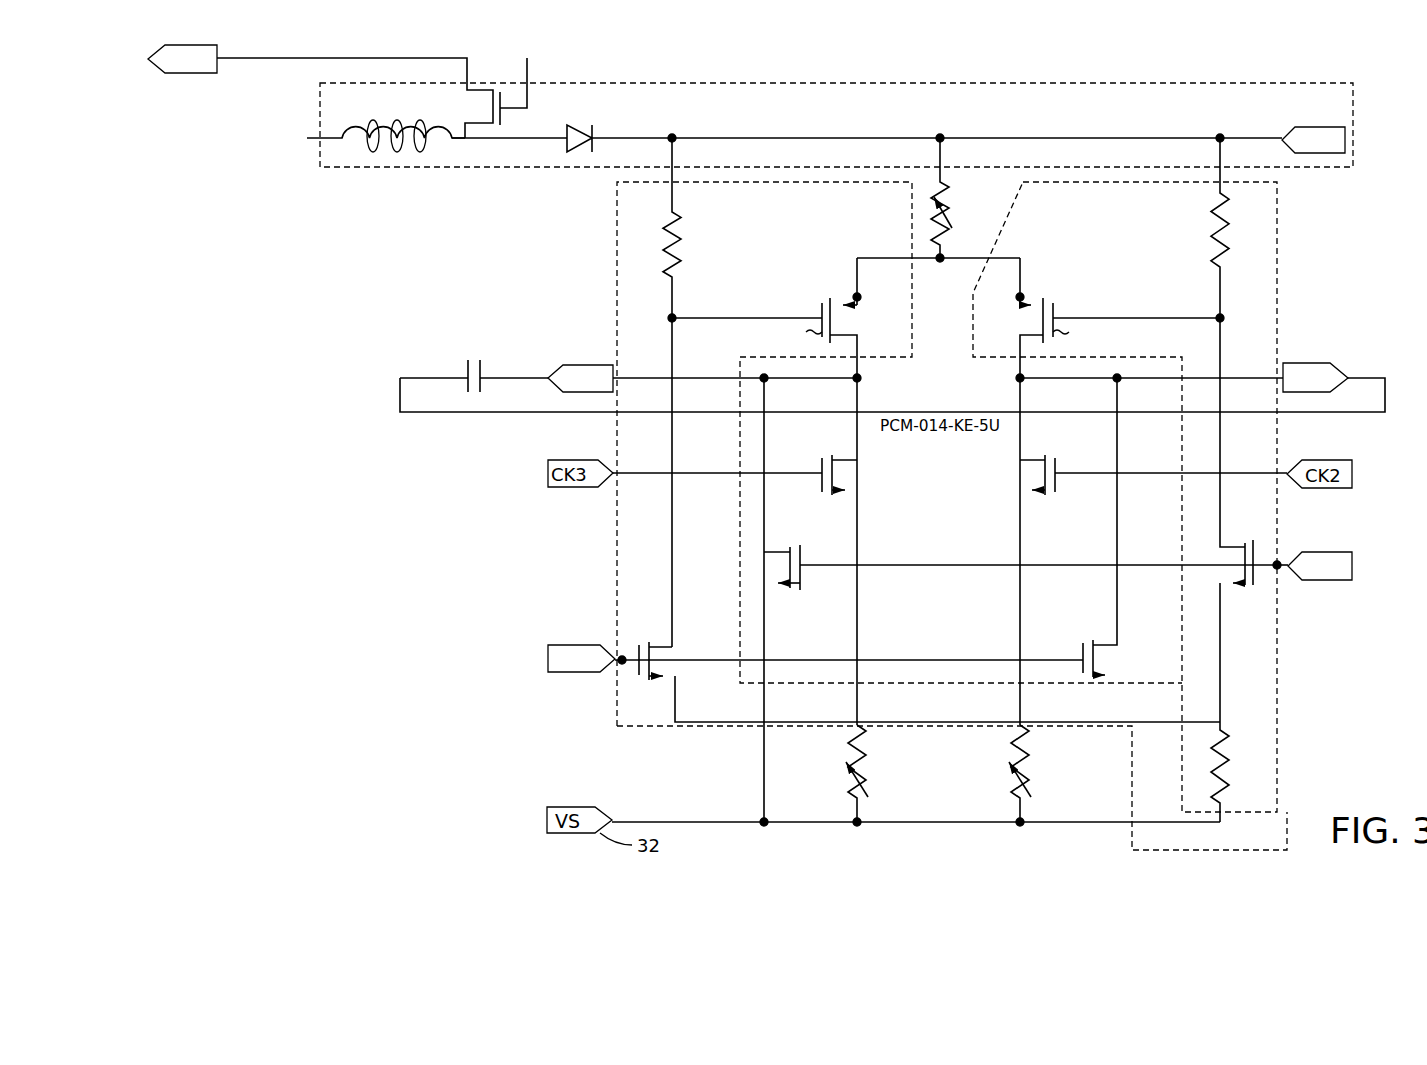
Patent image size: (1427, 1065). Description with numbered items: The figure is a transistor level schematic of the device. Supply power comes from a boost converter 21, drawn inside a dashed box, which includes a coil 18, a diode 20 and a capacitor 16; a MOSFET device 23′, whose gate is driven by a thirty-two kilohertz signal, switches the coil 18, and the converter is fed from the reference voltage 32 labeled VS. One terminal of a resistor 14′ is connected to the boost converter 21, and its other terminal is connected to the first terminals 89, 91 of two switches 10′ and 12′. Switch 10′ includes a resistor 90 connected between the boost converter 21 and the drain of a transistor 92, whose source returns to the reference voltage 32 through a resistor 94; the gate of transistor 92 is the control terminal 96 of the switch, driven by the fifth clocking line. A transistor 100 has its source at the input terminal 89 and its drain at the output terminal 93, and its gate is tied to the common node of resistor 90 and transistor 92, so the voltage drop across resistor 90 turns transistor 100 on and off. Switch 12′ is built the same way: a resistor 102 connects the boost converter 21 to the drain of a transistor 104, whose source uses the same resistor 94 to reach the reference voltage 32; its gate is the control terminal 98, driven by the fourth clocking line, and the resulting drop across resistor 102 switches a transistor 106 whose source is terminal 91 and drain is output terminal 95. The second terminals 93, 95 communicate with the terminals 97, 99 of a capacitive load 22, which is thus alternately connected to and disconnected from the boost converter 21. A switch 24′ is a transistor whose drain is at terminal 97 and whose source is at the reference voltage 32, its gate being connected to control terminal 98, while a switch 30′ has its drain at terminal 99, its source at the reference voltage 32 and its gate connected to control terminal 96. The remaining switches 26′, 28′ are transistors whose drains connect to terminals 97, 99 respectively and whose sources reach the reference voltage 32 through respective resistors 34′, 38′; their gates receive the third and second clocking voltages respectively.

The reference voltage 32 is at (181, 74).
The MOSFET device 23′ is at (436, 102).
The coil 18 is at (373, 152).
The diode 20 is at (580, 125).
The boost converter 21 is at (676, 83).
The capacitor 16 is at (1284, 131).
The switch 10′ is at (617, 515).
The switch 12′ is at (1265, 290).
The resistor 90 is at (682, 228).
The transistor 100 is at (775, 292).
The resistor 14′ is at (959, 198).
The first terminal 89 is at (913, 262).
The first terminal 91 is at (972, 262).
The transistor 106 is at (1095, 290).
The resistor 102 is at (1217, 258).
The capacitive load 22 is at (463, 365).
The terminal 97 is at (552, 368).
The second terminal 93 is at (862, 366).
The second terminal 95 is at (1015, 374).
The terminal 99 is at (1346, 338).
The switch 26′ is at (855, 492).
The switch 28′ is at (1025, 492).
The switch 24′ is at (800, 553).
The transistor 104 is at (1228, 586).
The control terminal 98 is at (1280, 562).
The switch 30′ is at (1083, 648).
The control terminal 96 is at (618, 655).
The transistor 92 is at (663, 680).
The resistor 34′ is at (845, 783).
The resistor 38′ is at (1010, 783).
The resistor 94 is at (1210, 785).